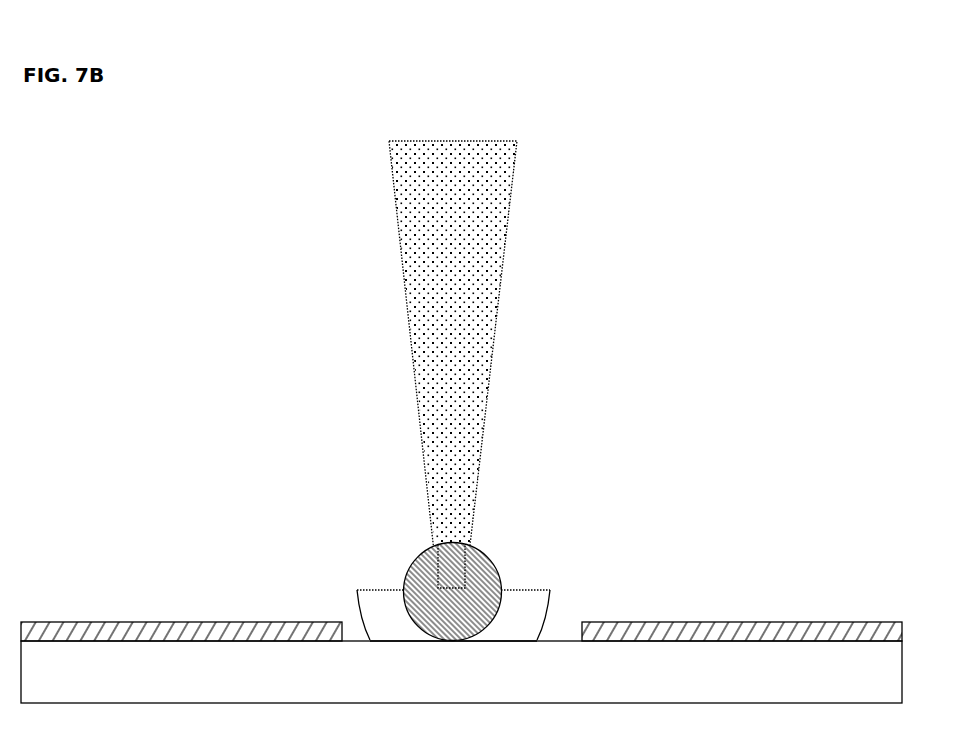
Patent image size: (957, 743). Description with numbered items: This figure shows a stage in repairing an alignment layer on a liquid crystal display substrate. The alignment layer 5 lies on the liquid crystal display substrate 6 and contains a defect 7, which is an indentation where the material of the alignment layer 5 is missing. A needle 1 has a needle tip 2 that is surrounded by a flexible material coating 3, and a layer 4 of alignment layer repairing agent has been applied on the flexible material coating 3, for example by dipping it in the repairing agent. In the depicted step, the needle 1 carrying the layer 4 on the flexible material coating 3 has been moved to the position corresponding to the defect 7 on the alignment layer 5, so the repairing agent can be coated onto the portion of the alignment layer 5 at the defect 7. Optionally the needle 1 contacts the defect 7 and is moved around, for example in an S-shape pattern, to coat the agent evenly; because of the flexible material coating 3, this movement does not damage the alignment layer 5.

The needle 1 is at (512, 378).
The needle tip 2 is at (455, 585).
The flexible material coating 3 is at (498, 605).
The layer of alignment layer repairing agent 4 is at (503, 622).
The alignment layer 5 is at (177, 629).
The liquid crystal display substrate 6 is at (461, 672).
The defect 7 is at (353, 627).